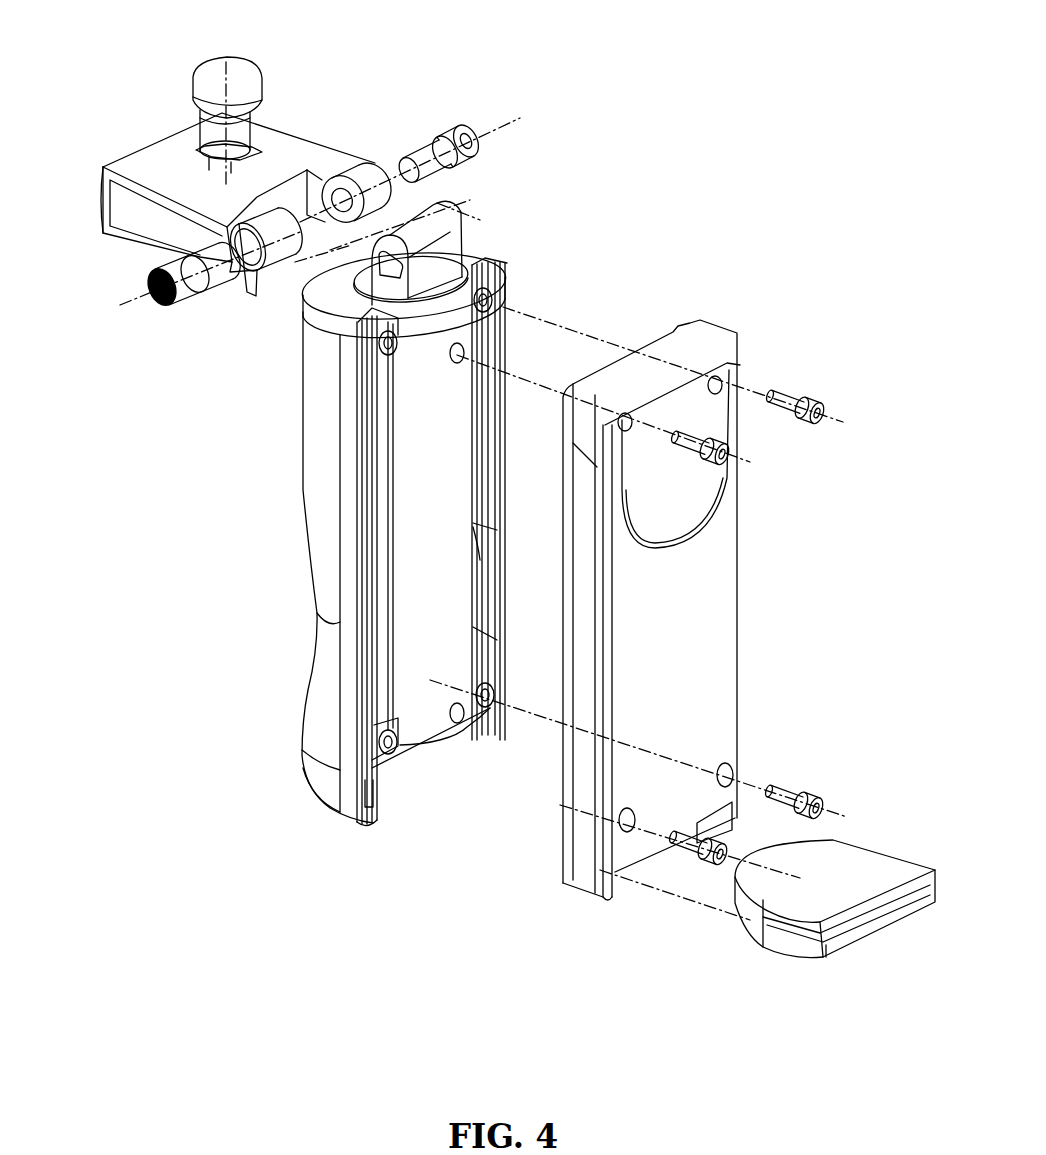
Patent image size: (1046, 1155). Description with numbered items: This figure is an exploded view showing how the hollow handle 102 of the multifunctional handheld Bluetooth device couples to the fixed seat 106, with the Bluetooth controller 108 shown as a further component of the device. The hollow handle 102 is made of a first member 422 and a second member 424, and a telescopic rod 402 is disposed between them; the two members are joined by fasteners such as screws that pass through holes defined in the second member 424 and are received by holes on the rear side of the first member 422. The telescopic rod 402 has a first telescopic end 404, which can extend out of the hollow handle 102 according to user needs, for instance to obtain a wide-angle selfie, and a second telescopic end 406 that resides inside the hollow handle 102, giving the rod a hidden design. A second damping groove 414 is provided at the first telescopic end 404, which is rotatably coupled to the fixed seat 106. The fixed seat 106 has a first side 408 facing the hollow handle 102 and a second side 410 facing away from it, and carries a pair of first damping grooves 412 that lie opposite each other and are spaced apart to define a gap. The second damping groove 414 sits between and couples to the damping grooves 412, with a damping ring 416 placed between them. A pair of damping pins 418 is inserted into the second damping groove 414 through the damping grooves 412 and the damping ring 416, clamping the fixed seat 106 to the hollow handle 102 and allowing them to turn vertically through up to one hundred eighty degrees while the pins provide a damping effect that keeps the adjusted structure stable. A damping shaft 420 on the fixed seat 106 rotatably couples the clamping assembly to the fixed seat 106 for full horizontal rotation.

The hollow handle 102 is at (418, 558).
The fixed seat 106 is at (301, 216).
The Bluetooth controller 108 is at (863, 868).
The telescopic rod 402 is at (423, 717).
The first telescopic end 404 is at (473, 273).
The second telescopic end 406 is at (424, 801).
The first side 408 is at (278, 277).
The second side 410 is at (140, 138).
The damping grooves 412 is at (243, 268).
The second damping groove 414 is at (450, 240).
The damping ring 416 is at (347, 183).
The damping pins 418 is at (162, 308).
The damping shaft 420 is at (250, 120).
The first member 422 is at (317, 703).
The second member 424 is at (704, 632).